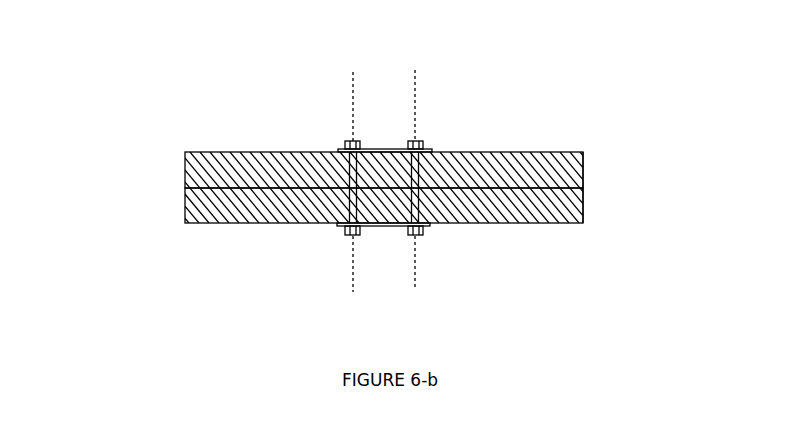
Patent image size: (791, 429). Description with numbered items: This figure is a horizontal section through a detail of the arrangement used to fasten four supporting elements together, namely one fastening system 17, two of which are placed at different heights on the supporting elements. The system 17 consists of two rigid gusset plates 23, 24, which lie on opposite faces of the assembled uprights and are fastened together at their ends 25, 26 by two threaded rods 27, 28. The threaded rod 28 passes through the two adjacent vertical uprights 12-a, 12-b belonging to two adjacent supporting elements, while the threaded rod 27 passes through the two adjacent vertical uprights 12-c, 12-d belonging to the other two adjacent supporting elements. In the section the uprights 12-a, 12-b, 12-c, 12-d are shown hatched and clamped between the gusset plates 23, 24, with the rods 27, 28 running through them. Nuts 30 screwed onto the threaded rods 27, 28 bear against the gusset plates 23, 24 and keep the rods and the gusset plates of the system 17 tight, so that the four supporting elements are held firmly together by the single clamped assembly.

The vertical upright 12-a is at (583, 202).
The vertical upright 12-b is at (575, 167).
The vertical upright 12-c is at (187, 205).
The vertical upright 12-d is at (183, 170).
The fastening system 17 is at (342, 146).
The rigid gusset plate 23 is at (383, 228).
The rigid gusset plate 24 is at (380, 142).
The end of gusset plates 25 is at (430, 226).
The end of gusset plates 26 is at (341, 228).
The threaded rod 27 is at (348, 195).
The threaded rod 28 is at (445, 150).
The nut 30 is at (357, 139).